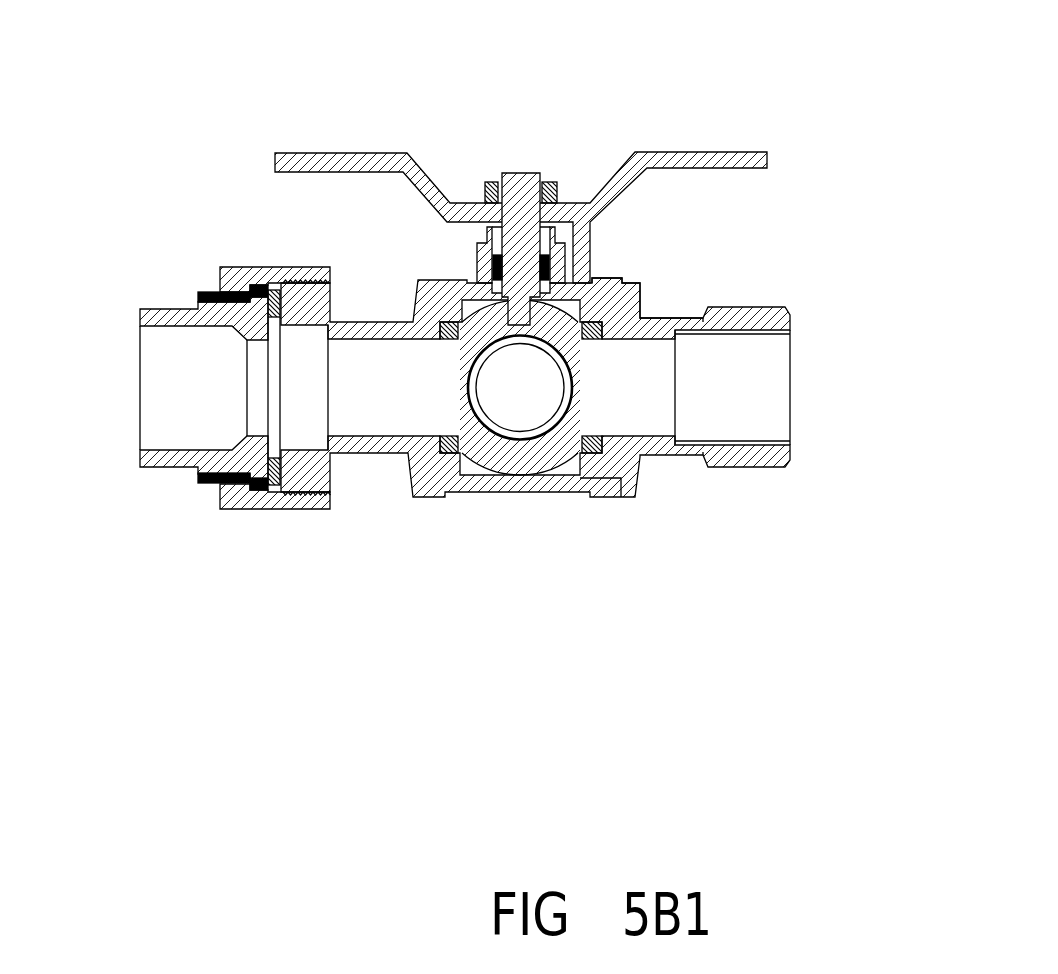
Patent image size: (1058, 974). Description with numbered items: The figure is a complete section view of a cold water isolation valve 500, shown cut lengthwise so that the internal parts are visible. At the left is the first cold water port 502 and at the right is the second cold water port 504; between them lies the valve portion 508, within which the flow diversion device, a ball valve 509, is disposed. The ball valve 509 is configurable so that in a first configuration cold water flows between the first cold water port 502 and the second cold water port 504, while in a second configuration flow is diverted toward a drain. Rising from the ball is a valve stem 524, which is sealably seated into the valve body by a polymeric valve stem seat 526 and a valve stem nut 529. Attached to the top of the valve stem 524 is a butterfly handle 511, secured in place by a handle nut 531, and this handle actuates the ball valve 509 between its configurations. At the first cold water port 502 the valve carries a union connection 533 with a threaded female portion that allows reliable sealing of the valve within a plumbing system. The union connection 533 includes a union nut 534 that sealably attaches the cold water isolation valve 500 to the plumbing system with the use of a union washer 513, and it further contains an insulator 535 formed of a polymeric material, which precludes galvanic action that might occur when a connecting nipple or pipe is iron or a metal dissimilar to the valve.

The cold water isolation valve 500 is at (790, 505).
The first cold water port 502 is at (135, 387).
The second cold water port 504 is at (792, 387).
The valve portion 508 is at (362, 318).
The ball valve 509 is at (620, 278).
The butterfly handle 511 is at (292, 165).
The union washer 513 is at (268, 290).
The valve stem 524 is at (520, 172).
The polymeric valve stem seat 526 is at (492, 275).
The valve stem nut 529 is at (490, 237).
The handle nut 531 is at (490, 183).
The union connection 533 is at (157, 315).
The union nut 534 is at (237, 500).
The insulator 535 is at (208, 485).